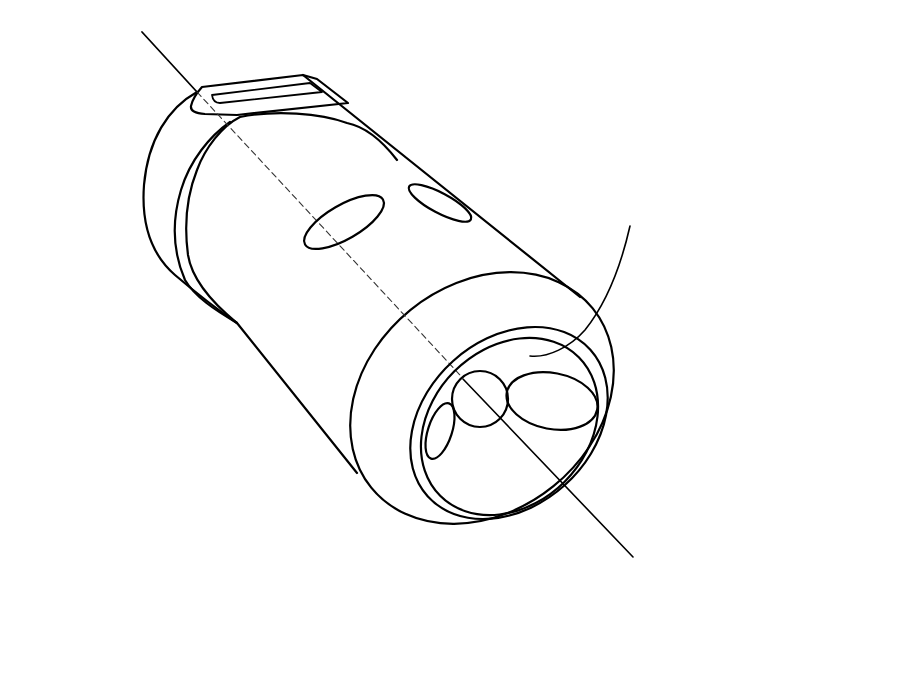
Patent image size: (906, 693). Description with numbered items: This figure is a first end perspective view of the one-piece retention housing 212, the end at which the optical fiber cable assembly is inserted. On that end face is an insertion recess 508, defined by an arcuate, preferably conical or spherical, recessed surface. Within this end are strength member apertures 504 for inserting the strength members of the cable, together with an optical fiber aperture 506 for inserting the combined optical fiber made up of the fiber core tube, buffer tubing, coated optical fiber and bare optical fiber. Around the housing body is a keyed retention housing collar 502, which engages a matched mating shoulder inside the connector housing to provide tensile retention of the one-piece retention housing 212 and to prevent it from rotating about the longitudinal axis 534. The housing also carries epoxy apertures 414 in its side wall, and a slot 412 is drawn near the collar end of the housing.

The one-piece retention housing 212 is at (645, 125).
The slot 412 is at (268, 80).
The epoxy apertures 414 is at (440, 175).
The keyed retention housing collar 502 is at (363, 128).
The strength member apertures 504 is at (566, 424).
The optical fiber aperture 506 is at (483, 423).
The insertion recess 508 is at (597, 279).
The longitudinal axis 534 is at (173, 66).